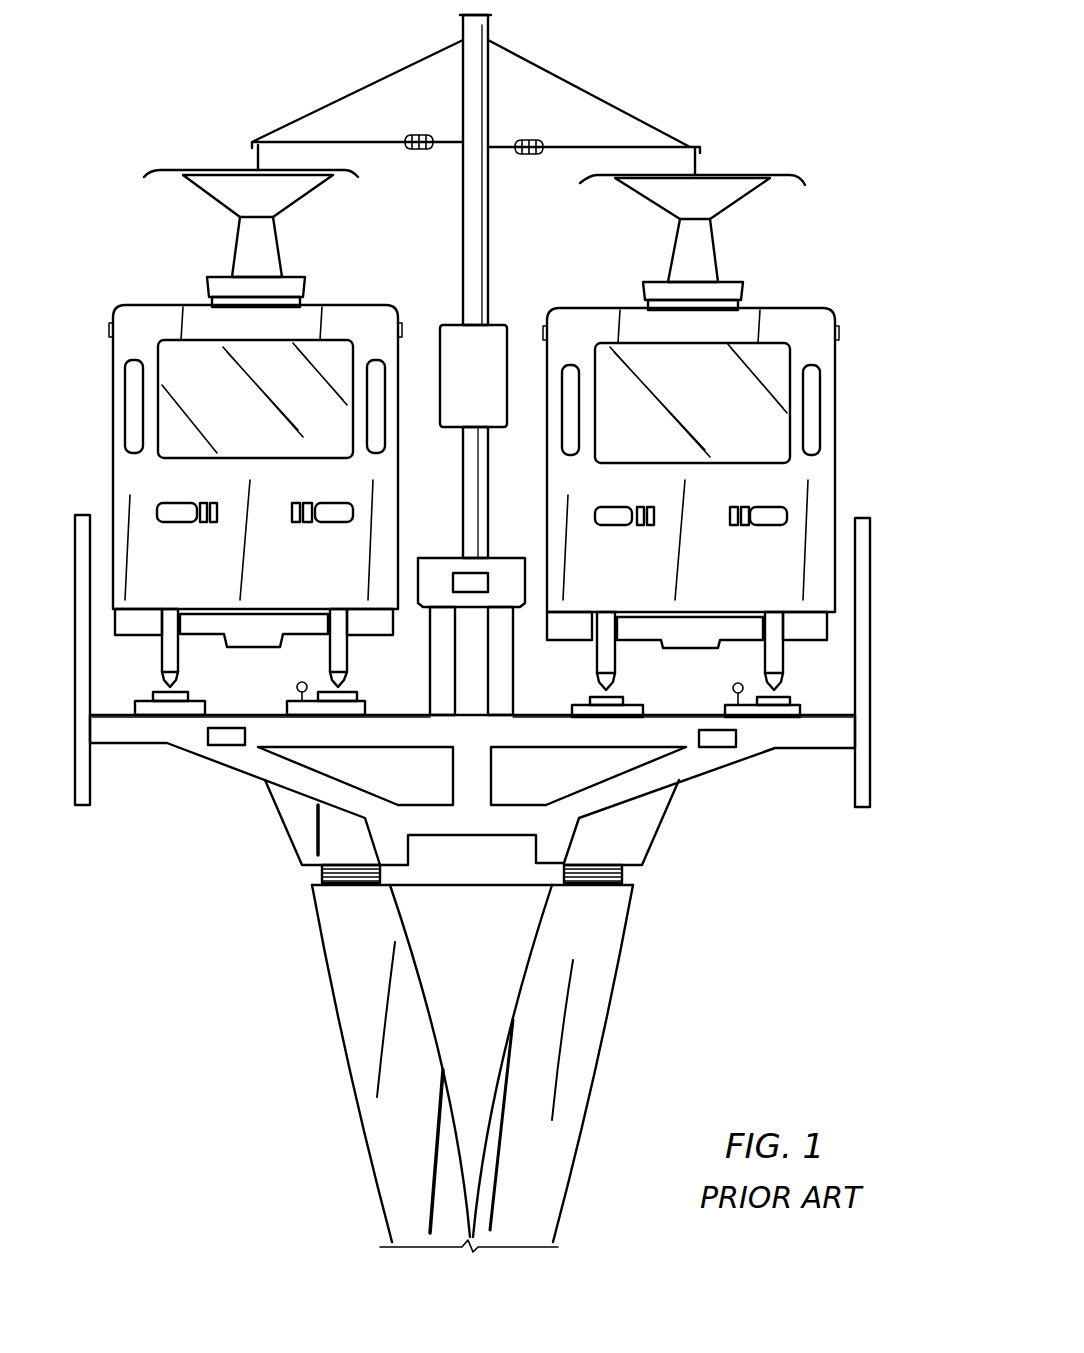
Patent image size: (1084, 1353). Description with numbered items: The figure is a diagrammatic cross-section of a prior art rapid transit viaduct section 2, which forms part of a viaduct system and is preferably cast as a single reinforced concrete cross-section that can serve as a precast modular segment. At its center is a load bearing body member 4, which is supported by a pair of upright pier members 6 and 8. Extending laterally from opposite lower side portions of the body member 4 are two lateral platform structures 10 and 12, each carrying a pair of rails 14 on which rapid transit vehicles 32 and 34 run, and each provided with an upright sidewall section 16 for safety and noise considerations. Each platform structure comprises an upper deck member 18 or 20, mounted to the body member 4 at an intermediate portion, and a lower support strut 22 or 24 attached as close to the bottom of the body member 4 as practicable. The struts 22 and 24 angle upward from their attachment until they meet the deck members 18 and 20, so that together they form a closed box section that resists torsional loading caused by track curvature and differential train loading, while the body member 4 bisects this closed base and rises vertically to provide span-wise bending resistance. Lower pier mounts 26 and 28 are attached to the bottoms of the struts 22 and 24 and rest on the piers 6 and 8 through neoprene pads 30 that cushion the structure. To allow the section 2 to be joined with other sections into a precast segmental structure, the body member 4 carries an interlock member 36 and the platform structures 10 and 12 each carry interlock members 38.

The rapid transit viaduct section 2 is at (188, 843).
The central load bearing body member 4 is at (517, 560).
The pier member 6 is at (380, 1142).
The pier member 8 is at (562, 1138).
The lateral platform structure 10 is at (258, 815).
The lateral platform structure 12 is at (718, 809).
The rails 14 is at (170, 690).
The upright sidewall section 16 is at (90, 790).
The deck member 18 is at (403, 715).
The deck member 20 is at (535, 715).
The lower support strut 22 is at (360, 788).
The lower support strut 24 is at (577, 787).
The lower pier mount 26 is at (297, 853).
The lower pier mount 28 is at (645, 855).
The neoprene pads 30 is at (357, 886).
The rapid transit vehicle 32 is at (160, 305).
The rapid transit vehicle 34 is at (790, 312).
The interlock member 36 is at (455, 578).
The interlock members 38 is at (227, 747).